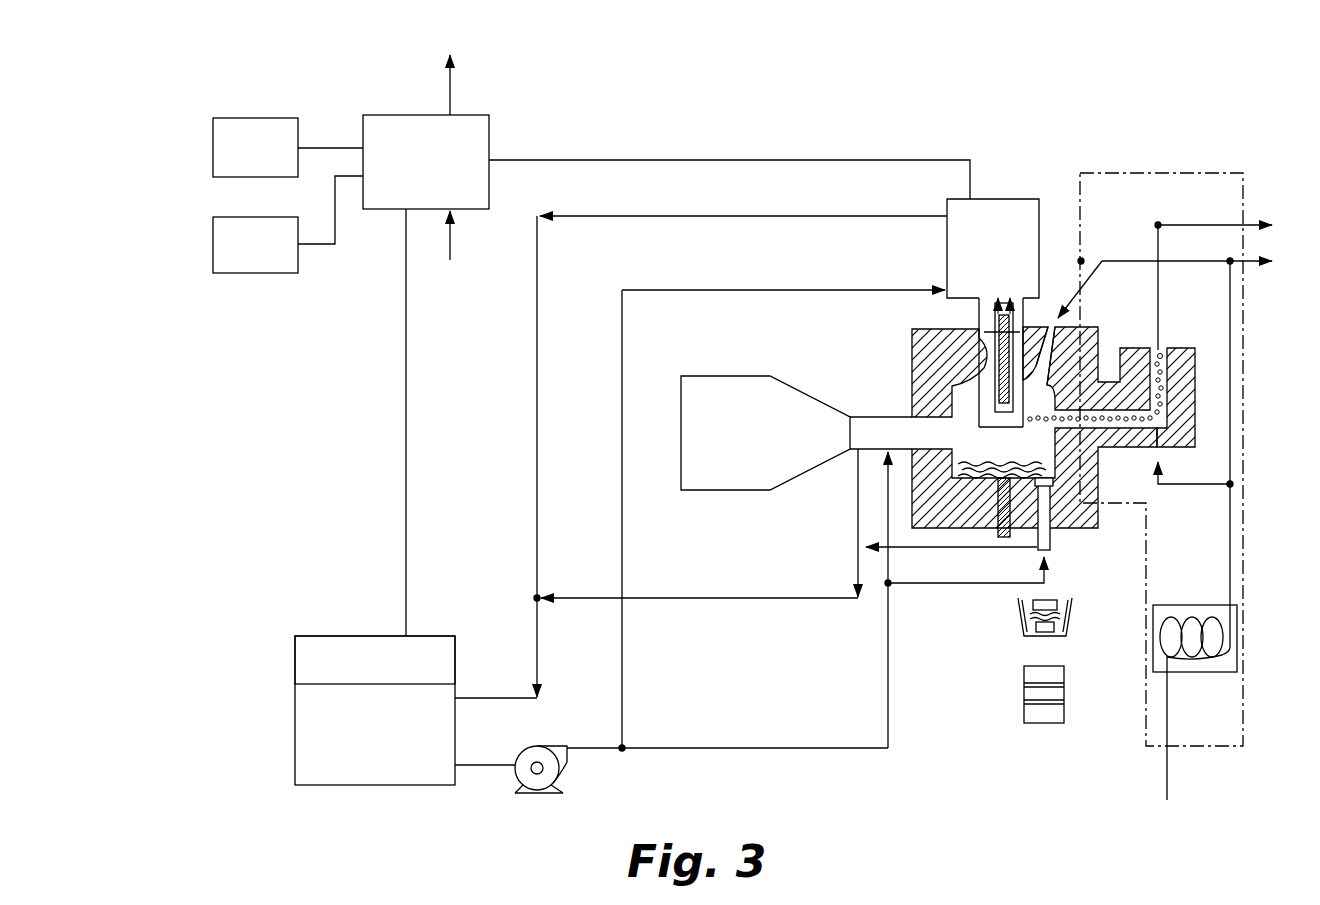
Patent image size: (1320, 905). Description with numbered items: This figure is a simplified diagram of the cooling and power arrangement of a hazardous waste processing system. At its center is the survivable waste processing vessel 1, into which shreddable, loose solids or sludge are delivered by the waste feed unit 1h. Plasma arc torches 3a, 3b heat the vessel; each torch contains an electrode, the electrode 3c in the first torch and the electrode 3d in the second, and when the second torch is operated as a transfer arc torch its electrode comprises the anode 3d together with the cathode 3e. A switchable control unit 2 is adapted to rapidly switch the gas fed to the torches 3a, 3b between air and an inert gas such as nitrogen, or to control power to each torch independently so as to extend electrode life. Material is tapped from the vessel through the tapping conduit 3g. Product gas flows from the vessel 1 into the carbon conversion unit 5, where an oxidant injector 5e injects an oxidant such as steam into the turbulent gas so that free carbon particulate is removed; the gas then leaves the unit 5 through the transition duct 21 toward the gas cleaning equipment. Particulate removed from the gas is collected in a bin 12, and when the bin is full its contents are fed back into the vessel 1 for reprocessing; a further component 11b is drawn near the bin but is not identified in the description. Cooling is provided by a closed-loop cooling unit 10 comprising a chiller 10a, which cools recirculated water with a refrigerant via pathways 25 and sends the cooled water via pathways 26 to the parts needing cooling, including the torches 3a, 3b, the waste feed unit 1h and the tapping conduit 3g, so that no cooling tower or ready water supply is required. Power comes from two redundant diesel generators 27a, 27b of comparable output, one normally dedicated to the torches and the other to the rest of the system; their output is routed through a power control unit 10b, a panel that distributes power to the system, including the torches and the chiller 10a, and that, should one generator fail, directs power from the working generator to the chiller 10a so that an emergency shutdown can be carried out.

The survivable waste processing vessel 1 is at (963, 445).
The waste feed unit 1h is at (735, 492).
The switchable control unit 2 is at (967, 213).
The plasma arc torch 3a is at (998, 298).
The plasma arc torch 3b is at (1008, 298).
The electrode 3c is at (994, 331).
The electrode (anode) 3d is at (1038, 288).
The cathode 3e is at (1001, 539).
The tapping conduit 3g is at (1050, 537).
The carbon conversion unit 5 is at (1153, 195).
The oxidant injector 5e is at (1210, 670).
The cooling unit 10 is at (388, 787).
The chiller 10a is at (342, 634).
The power control unit 10b is at (483, 135).
The slag cart 11b is at (1020, 636).
The bin 12 is at (1036, 725).
The transition duct 21 is at (1159, 224).
The pathways 25 is at (535, 320).
The pathways 26 is at (620, 350).
The diesel generator 27a is at (278, 273).
The diesel generator 27b is at (274, 118).